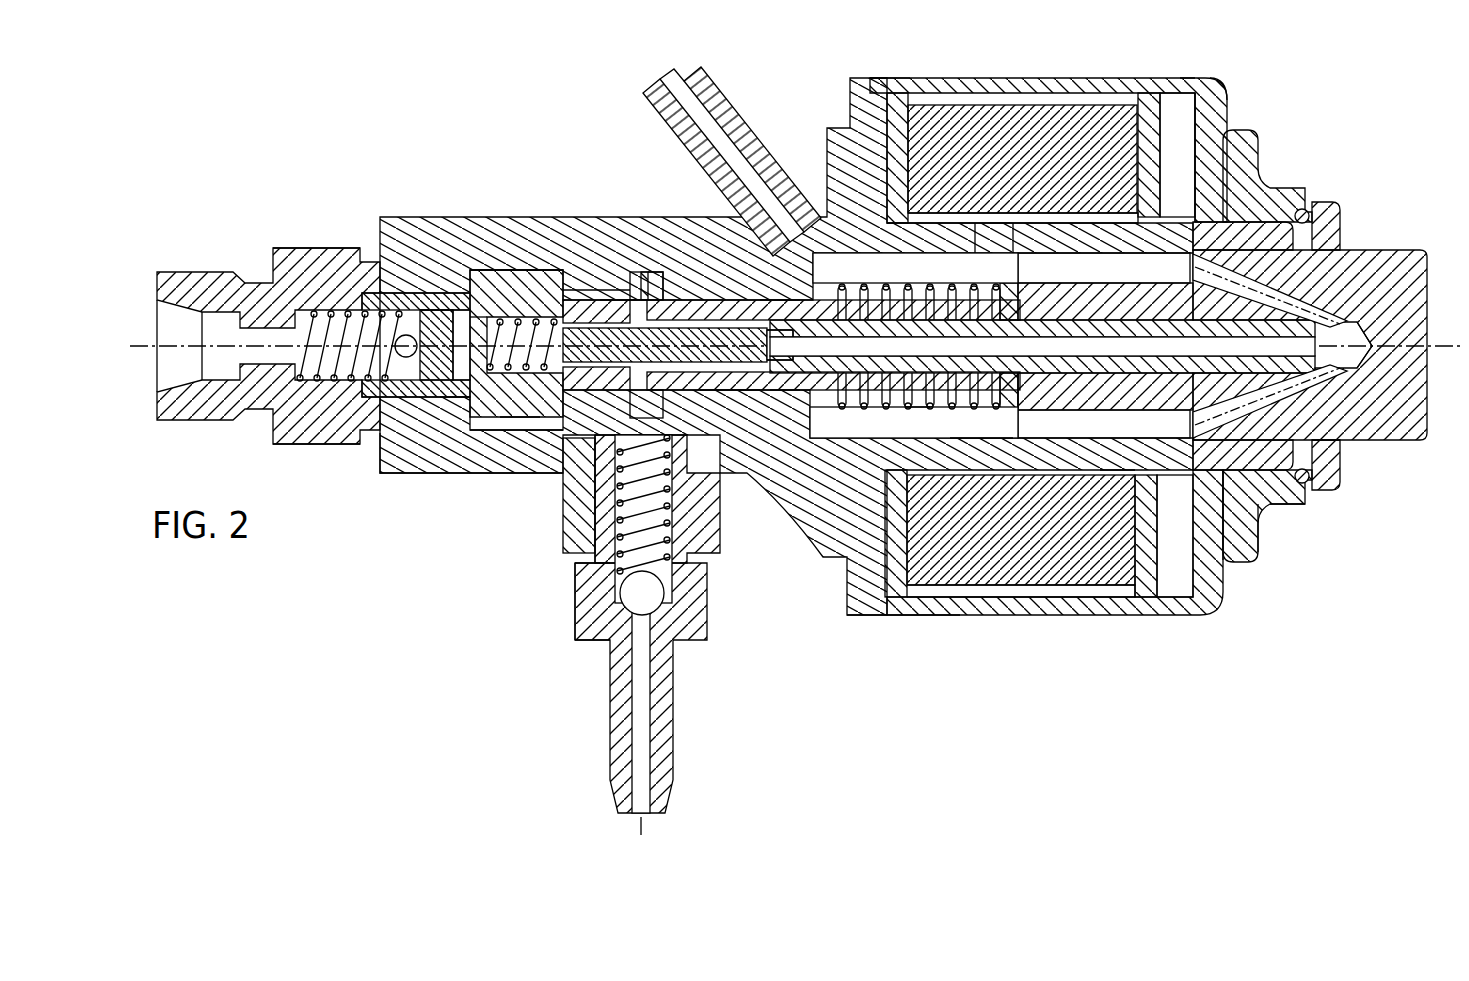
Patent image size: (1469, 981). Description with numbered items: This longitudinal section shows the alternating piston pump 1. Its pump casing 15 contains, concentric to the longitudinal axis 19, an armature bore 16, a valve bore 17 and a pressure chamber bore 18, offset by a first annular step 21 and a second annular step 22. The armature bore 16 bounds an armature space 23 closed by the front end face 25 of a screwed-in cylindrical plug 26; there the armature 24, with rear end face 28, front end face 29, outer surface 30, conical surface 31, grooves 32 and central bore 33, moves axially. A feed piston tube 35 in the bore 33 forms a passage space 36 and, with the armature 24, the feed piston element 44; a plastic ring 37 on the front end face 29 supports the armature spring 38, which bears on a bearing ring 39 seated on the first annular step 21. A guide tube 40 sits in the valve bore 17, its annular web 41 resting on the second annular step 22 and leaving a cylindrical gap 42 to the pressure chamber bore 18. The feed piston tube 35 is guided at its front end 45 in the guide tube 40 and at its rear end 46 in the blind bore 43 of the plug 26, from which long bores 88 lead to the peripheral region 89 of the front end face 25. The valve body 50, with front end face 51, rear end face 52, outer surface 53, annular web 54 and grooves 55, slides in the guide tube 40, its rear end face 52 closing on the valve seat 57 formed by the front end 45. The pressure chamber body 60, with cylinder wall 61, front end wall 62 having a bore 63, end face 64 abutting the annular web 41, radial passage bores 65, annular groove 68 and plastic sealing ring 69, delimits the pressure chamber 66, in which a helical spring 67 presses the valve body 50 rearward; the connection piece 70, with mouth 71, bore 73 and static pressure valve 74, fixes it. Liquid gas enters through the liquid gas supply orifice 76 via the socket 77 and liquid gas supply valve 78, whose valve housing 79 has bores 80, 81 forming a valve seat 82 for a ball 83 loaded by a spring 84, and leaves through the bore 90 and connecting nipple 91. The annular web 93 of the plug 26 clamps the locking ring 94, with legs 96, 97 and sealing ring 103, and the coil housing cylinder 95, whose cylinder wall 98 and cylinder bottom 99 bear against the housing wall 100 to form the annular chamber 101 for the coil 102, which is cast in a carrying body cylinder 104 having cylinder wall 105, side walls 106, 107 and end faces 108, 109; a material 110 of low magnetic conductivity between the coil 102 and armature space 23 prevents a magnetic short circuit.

The alternating piston pump 1 is at (887, 642).
The pump casing 15 is at (388, 476).
The armature bore 16 is at (820, 548).
The valve bore 17 is at (738, 405).
The pressure chamber bore 18 is at (548, 268).
The longitudinal axis 19 is at (160, 362).
The first annular step 21 is at (800, 375).
The second annular step 22 is at (660, 265).
The armature space 23 is at (1150, 505).
The armature 24 is at (1052, 288).
The front end face 25 is at (1250, 232).
The cylindrical plug 26 is at (1370, 262).
The rear end face 28 is at (1175, 472).
The front end face 29 is at (1045, 386).
The outer surface 30 is at (1042, 492).
The conical surface 31 is at (1172, 225).
The grooves 32 is at (1120, 478).
The continuous bore 33 is at (1030, 240).
The feed piston tube 35 is at (1122, 300).
The passage space 36 is at (982, 445).
The plastic ring 37 is at (1030, 402).
The armature spring 38 is at (962, 398).
The bearing ring 39 is at (868, 398).
The guide tube 40 is at (912, 398).
The annular web 41 is at (652, 285).
The cylindrical gap 42 is at (637, 278).
The blind bore 43 is at (1360, 362).
The feed piston element 44 is at (937, 292).
The front end 45 is at (782, 395).
The rear end 46 is at (1330, 432).
The valve body 50 is at (655, 392).
The front end face 51 is at (517, 300).
The rear end face 52 is at (762, 362).
The outer surface 53 is at (522, 430).
The annular web 54 is at (575, 300).
The grooves 55 is at (702, 304).
The valve seat 57 is at (780, 300).
The pressure chamber body 60 is at (487, 430).
The cylinder wall 61 is at (575, 455).
The front end wall 62 is at (400, 296).
The bore 63 is at (455, 430).
The end face 64 is at (606, 300).
The radial passage bores 65 is at (524, 368).
The pressure chamber 66 is at (498, 275).
The helical spring 67 is at (440, 310).
The annular groove 68 is at (522, 300).
The plastic sealing ring 69 is at (586, 298).
The connection piece 70 is at (307, 262).
The mouth 71 is at (170, 300).
The bore 73 is at (252, 326).
The static pressure valve 74 is at (425, 430).
The liquid gas supply orifice 76 is at (568, 520).
The socket 77 is at (595, 540).
The liquid gas supply valve 78 is at (575, 625).
The valve housing 79 is at (592, 600).
The bore 80 is at (660, 472).
The bore 81 is at (638, 724).
The valve seat 82 is at (664, 608).
The ball 83 is at (612, 642).
The spring 84 is at (590, 563).
The long bores 88 is at (1345, 320).
The peripheral region 89 is at (1262, 504).
The bore 90 is at (800, 228).
The connecting nipple 91 is at (752, 132).
The annular web 93 is at (1325, 212).
The locking ring 94 is at (1242, 138).
The coil housing cylinder 95 is at (1238, 90).
The leg 96 is at (1305, 502).
The leg 97 is at (1235, 570).
The cylinder wall 98 is at (937, 614).
The cylinder bottom 99 is at (1212, 616).
The housing wall 100 is at (852, 80).
The annular chamber 101 is at (902, 100).
The coil 102 is at (970, 120).
The sealing ring 103 is at (1297, 200).
The carrying body cylinder 104 is at (1160, 590).
The cylinder wall 105 is at (1001, 245).
The rear side wall 106 is at (1150, 110).
The front side wall 107 is at (895, 78).
The end face 108 is at (1210, 120).
The end face 109 is at (872, 90).
The material having low magnetic conductivity 110 is at (975, 240).